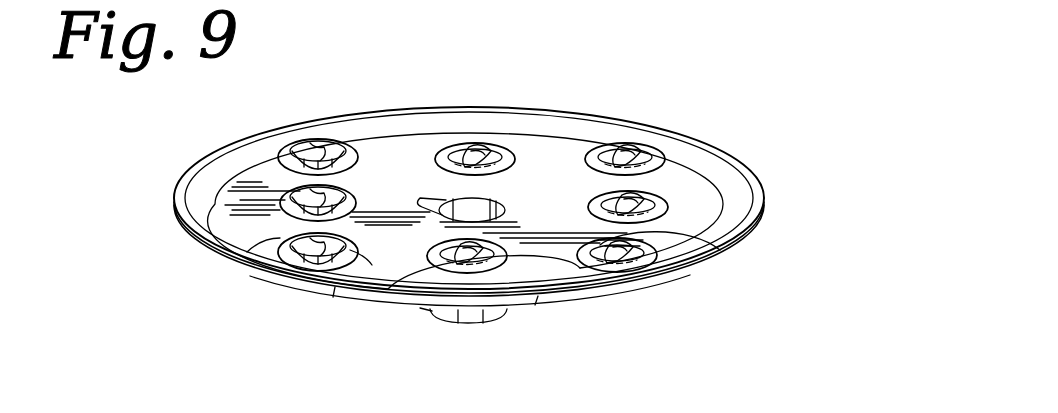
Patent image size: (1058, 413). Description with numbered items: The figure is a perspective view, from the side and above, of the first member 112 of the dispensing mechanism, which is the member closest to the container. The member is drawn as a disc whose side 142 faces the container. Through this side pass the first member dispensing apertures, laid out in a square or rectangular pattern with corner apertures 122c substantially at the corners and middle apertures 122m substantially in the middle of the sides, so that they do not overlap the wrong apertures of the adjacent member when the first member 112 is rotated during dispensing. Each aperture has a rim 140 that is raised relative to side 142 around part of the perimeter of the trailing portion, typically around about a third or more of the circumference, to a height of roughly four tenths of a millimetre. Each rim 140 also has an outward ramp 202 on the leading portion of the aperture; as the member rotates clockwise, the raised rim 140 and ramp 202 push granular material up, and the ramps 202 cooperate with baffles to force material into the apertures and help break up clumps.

The first member 112 is at (575, 105).
The corner apertures 122c is at (630, 152).
The middle apertures 122m is at (643, 198).
The rims 140 is at (350, 143).
The side 142 is at (548, 207).
The outward ramp 202 is at (289, 150).